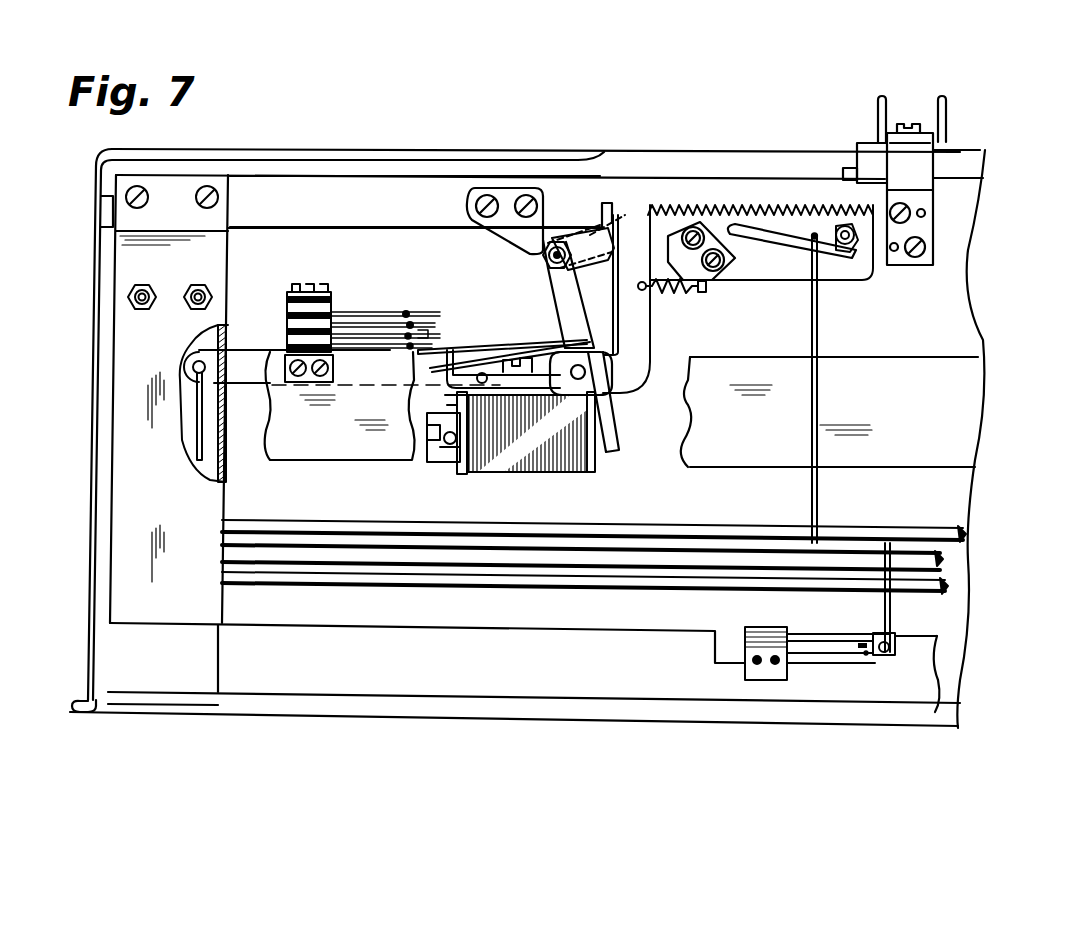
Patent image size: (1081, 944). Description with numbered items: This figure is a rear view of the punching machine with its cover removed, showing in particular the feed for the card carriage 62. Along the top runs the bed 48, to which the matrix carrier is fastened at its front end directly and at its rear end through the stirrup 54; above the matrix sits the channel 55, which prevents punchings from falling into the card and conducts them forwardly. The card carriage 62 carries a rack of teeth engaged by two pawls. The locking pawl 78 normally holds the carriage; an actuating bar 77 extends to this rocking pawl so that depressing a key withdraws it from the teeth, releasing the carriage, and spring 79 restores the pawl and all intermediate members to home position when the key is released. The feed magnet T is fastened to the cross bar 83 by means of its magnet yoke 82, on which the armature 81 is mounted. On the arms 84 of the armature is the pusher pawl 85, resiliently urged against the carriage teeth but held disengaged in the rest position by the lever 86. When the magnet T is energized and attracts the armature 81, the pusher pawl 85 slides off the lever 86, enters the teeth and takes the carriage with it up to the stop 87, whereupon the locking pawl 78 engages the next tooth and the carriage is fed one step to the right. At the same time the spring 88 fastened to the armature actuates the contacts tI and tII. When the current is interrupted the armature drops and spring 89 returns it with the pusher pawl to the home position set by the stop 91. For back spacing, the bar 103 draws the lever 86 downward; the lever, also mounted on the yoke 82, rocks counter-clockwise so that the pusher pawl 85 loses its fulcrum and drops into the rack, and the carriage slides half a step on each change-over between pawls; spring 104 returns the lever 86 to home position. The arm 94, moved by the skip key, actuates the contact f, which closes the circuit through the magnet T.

The bed 48 is at (321, 195).
The stop 91 is at (507, 205).
The stop 87 is at (678, 228).
The locking pawl 78 is at (768, 236).
The card carriage 62 is at (810, 205).
The channel 55 is at (945, 113).
The stirrup 54 is at (925, 166).
The spring 104 is at (666, 287).
The pusher pawl 85 is at (583, 247).
The arms 84 is at (556, 302).
The contact tII is at (406, 318).
The contact tI is at (413, 338).
The spring 88 is at (449, 348).
The spring 89 is at (483, 348).
The lever 86 is at (190, 360).
The bar 103 is at (196, 432).
The cross bar 83 is at (308, 440).
The magnet yoke 82 is at (455, 462).
The feed magnet T is at (524, 460).
The armature 81 is at (620, 452).
The spring 79 is at (860, 254).
The actuating bar 77 is at (819, 503).
The arm 94 is at (892, 621).
The contact f is at (864, 649).